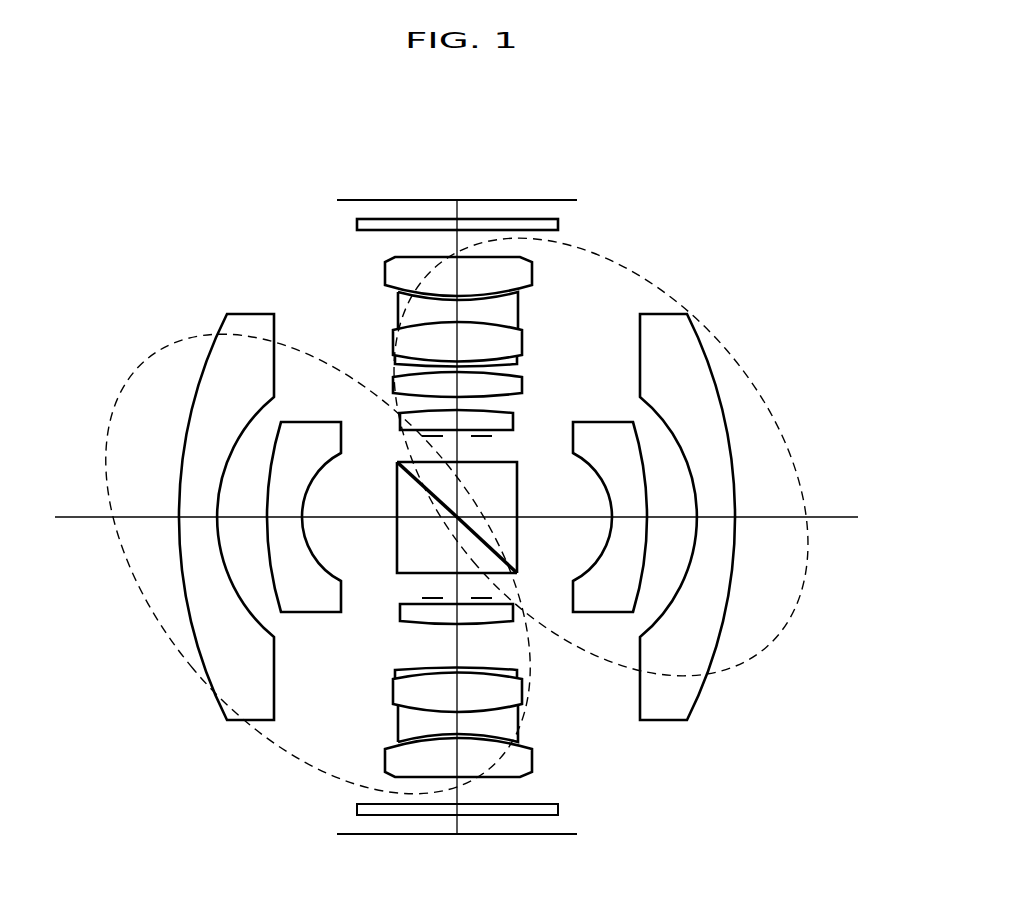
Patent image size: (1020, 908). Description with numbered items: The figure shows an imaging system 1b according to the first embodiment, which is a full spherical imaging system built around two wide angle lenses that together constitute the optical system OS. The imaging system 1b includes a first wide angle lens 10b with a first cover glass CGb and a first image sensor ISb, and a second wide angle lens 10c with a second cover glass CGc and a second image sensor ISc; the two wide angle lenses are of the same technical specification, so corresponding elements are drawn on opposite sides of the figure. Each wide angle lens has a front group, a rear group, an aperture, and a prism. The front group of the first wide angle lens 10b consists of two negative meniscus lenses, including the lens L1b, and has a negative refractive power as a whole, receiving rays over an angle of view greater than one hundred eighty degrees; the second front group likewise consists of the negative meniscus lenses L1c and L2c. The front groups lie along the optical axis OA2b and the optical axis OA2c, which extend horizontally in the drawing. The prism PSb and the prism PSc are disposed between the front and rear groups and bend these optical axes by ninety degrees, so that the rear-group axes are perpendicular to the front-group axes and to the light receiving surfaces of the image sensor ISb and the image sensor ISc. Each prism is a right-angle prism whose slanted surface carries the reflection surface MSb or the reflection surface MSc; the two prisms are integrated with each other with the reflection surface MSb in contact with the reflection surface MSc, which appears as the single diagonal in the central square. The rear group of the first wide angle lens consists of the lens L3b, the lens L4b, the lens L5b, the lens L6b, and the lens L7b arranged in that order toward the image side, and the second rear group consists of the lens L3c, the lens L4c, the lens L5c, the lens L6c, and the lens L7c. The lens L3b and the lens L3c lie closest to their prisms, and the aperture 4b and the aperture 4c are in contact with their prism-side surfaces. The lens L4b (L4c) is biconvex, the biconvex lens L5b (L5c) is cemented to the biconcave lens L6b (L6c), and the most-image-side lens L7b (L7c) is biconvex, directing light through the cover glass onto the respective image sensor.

The imaging system 1b is at (702, 133).
The optical system OS is at (285, 251).
The optical axis of the front group OA2c is at (88, 516).
The optical axis of the front group OA2b is at (862, 493).
The first wide angle lens 10b is at (772, 418).
The second wide angle lens 10c is at (150, 607).
The first image sensor ISb is at (529, 200).
The second image sensor ISc is at (385, 834).
The first cover glass CGb is at (560, 225).
The second cover glass CGc is at (355, 810).
The negative meniscus lens L1b is at (708, 362).
The lens L3b is at (515, 420).
The lens L4b is at (397, 361).
The lens L5b is at (522, 337).
The lens L6b is at (398, 307).
The lens L7b is at (385, 271).
The negative meniscus lens L1c is at (204, 668).
The negative meniscus lens L2c is at (312, 613).
The lens L3c is at (400, 612).
The lens L4c is at (518, 672).
The lens L5c is at (390, 692).
The lens L6c is at (520, 730).
The lens L7c is at (531, 766).
The aperture 4b is at (493, 436).
The aperture 4c is at (425, 598).
The prism PSb is at (507, 490).
The prism PSc is at (408, 542).
The reflection surface MSb is at (432, 497).
The reflection surface MSc is at (483, 541).